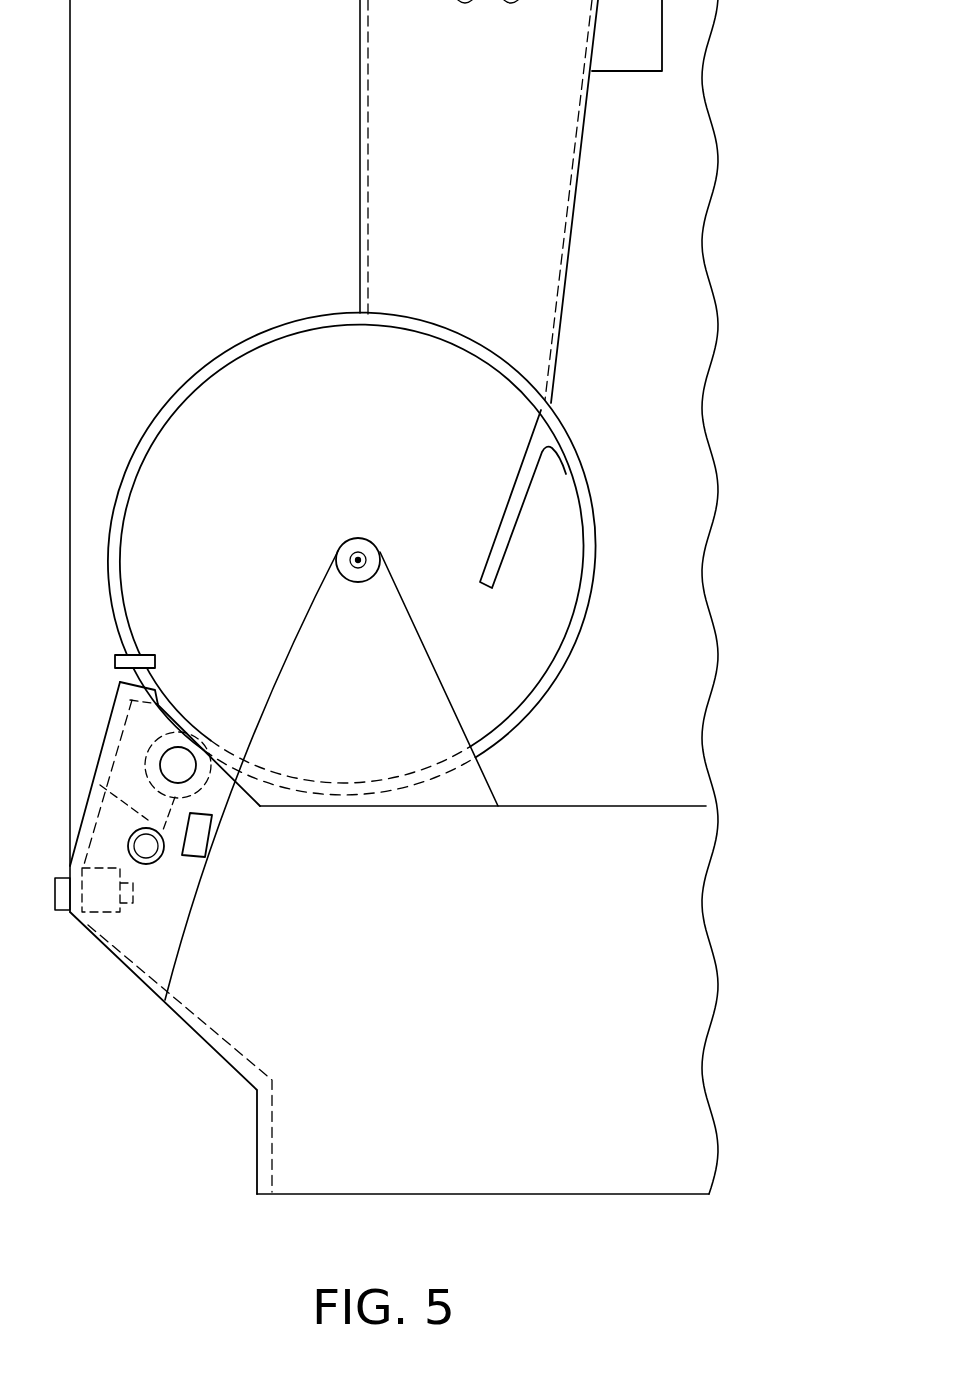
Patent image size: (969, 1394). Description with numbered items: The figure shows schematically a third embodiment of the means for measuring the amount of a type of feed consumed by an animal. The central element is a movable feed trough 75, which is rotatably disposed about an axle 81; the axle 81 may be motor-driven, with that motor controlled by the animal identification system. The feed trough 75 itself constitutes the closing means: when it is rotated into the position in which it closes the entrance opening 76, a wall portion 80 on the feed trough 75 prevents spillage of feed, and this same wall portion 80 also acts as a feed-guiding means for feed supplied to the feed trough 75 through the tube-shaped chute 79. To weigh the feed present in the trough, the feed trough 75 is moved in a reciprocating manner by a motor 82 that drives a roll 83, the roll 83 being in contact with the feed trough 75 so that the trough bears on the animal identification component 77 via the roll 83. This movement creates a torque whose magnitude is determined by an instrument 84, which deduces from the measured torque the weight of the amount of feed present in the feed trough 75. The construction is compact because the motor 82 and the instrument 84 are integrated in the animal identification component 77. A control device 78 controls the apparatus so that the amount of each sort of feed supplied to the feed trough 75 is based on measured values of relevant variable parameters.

The feed trough 75 is at (563, 663).
The entrance opening 76 is at (278, 332).
The animal identification component 77 is at (138, 935).
The control device 78 is at (625, 42).
The tube-shaped chute 79 is at (550, 197).
The wall portion 80 is at (523, 483).
The axle 81 is at (362, 553).
The motor 82 is at (160, 863).
The roll 83 is at (203, 773).
The instrument 84 is at (197, 838).